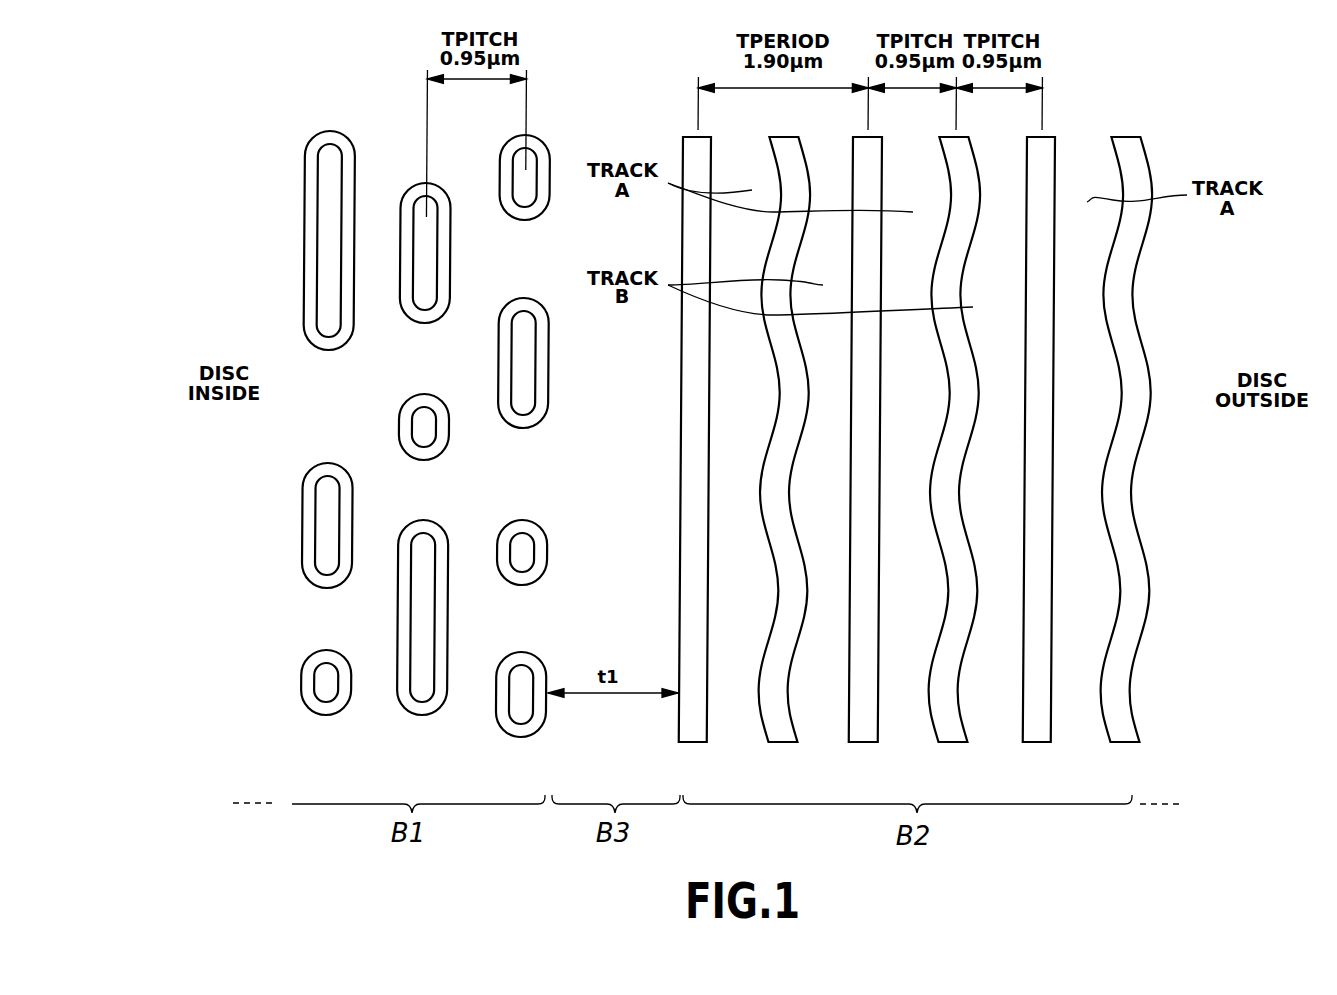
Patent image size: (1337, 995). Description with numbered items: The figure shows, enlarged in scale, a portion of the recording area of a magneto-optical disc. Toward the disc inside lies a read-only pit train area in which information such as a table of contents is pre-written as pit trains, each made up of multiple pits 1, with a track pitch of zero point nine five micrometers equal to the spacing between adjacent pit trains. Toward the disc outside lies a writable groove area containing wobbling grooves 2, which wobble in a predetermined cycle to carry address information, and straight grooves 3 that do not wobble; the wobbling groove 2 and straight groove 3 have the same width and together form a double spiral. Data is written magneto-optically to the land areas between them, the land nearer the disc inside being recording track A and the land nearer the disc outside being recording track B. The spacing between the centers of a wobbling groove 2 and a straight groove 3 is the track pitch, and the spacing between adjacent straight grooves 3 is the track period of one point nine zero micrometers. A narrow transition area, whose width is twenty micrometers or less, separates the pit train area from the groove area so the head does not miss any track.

The pit 1 is at (293, 225).
The wobbling groove 2 is at (777, 742).
The straight groove 3 is at (698, 741).